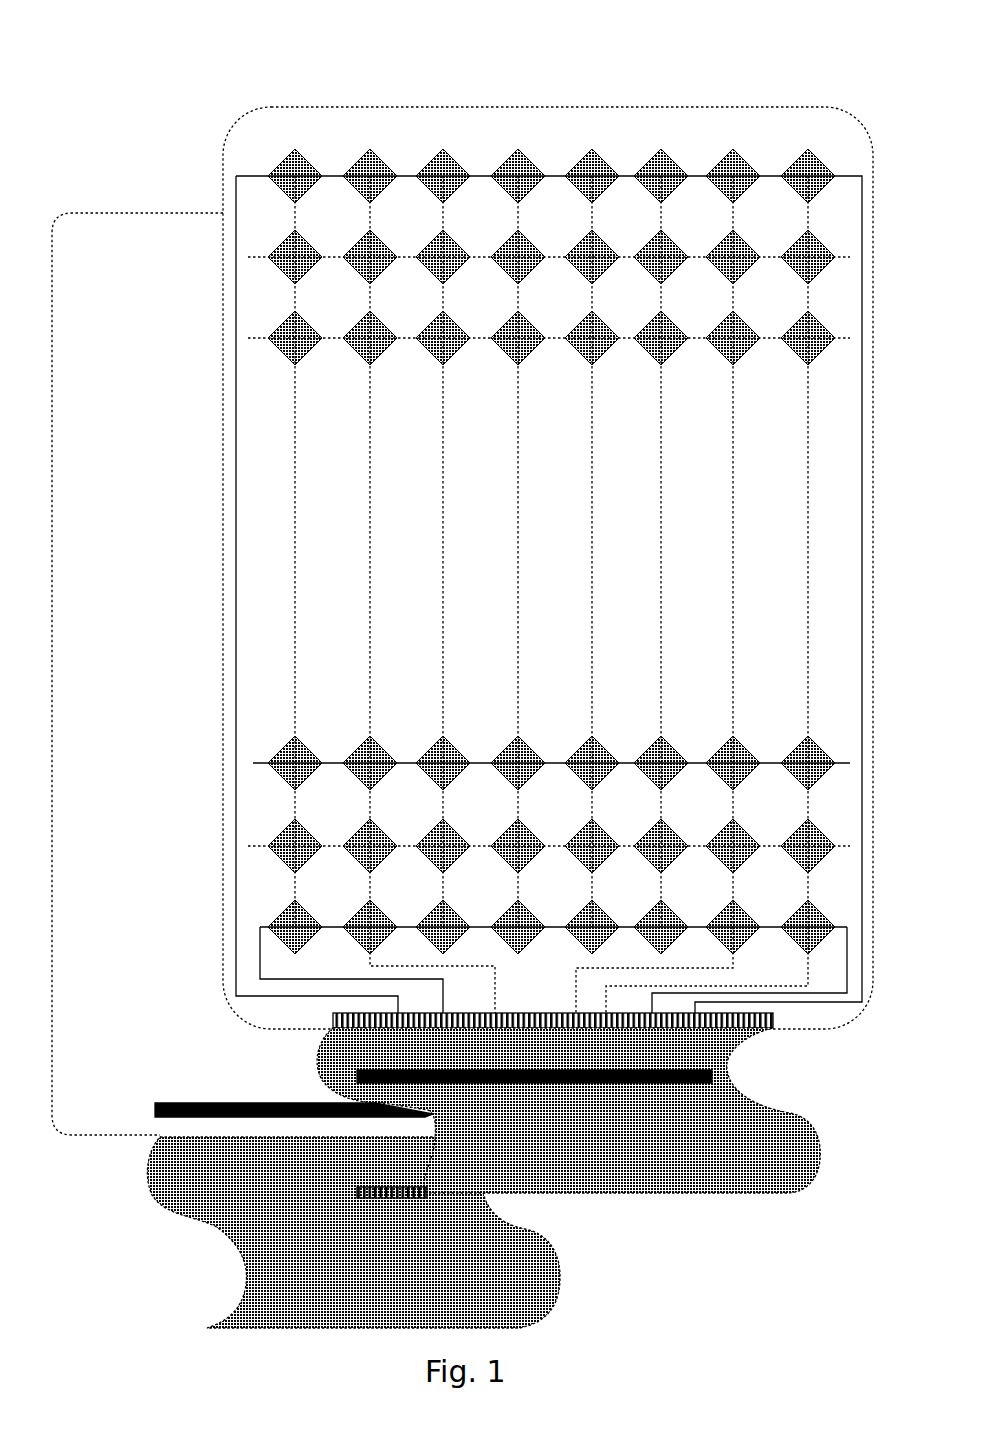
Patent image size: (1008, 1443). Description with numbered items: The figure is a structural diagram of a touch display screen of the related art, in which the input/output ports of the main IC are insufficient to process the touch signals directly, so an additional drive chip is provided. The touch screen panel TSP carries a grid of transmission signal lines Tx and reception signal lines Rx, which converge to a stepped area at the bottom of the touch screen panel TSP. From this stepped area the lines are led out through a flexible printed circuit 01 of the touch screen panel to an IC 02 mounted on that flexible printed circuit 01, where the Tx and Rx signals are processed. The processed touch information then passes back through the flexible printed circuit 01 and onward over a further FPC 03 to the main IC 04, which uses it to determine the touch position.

The touch screen panel TSP is at (683, 127).
The transmission signal lines Tx is at (487, 176).
The reception signal lines Rx is at (370, 210).
The flexible printed circuit of the TSP 01 is at (800, 1138).
The IC of the TSP 02 is at (712, 1076).
The FPC 03 is at (183, 1222).
The main IC 04 is at (157, 1120).